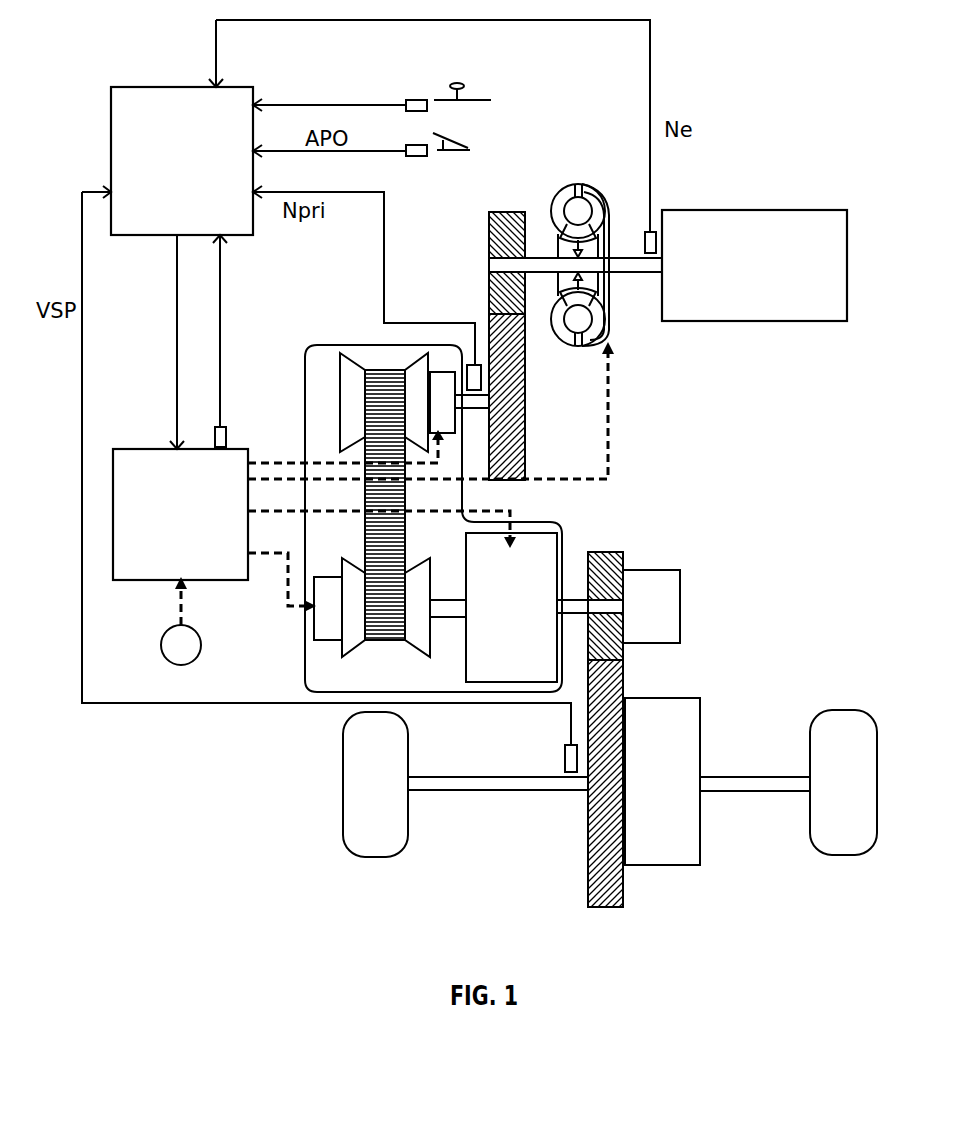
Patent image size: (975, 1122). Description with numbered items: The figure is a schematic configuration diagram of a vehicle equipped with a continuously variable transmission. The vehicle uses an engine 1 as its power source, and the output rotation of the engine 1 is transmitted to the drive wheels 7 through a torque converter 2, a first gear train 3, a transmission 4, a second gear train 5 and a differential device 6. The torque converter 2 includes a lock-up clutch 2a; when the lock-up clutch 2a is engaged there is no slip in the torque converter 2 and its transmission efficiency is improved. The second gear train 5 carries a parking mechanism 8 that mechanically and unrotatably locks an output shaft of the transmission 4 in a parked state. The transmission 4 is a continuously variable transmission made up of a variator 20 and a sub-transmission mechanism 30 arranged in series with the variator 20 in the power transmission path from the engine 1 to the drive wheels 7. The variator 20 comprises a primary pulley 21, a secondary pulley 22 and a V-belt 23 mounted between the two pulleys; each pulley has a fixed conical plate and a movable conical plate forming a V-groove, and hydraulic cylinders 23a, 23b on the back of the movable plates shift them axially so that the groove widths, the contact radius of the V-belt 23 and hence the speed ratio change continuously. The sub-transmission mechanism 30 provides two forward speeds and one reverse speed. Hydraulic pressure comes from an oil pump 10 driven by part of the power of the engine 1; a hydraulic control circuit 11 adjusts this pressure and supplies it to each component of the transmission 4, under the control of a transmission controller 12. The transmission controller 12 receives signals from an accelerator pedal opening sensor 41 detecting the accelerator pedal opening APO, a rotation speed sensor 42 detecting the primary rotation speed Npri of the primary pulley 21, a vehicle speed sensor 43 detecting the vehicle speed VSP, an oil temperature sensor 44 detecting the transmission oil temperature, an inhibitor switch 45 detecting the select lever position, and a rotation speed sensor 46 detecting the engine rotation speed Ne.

The engine 1 is at (835, 215).
The torque converter 2 is at (611, 202).
The lock-up clutch 2a is at (613, 295).
The first gear train 3 is at (507, 206).
The transmission 4 is at (350, 345).
The second gear train 5 is at (607, 917).
The differential device 6 is at (663, 853).
The drive wheels 7 is at (375, 843).
The parking mechanism 8 is at (665, 598).
The oil pump 10 is at (161, 633).
The hydraulic control circuit 11 is at (131, 453).
The transmission controller 12 is at (238, 97).
The variator 20 is at (322, 375).
The primary pulley 21 is at (352, 402).
The secondary pulley 22 is at (355, 625).
The V-belt 23 is at (385, 370).
The hydraulic cylinder 23a is at (440, 380).
The hydraulic cylinder 23b is at (323, 614).
The sub-transmission mechanism 30 is at (545, 548).
The accelerator pedal opening sensor 41 is at (416, 157).
The rotation speed sensor 42 is at (473, 378).
The vehicle speed sensor 43 is at (570, 760).
The oil temperature sensor 44 is at (227, 437).
The inhibitor switch 45 is at (415, 98).
The rotation speed sensor 46 is at (650, 240).